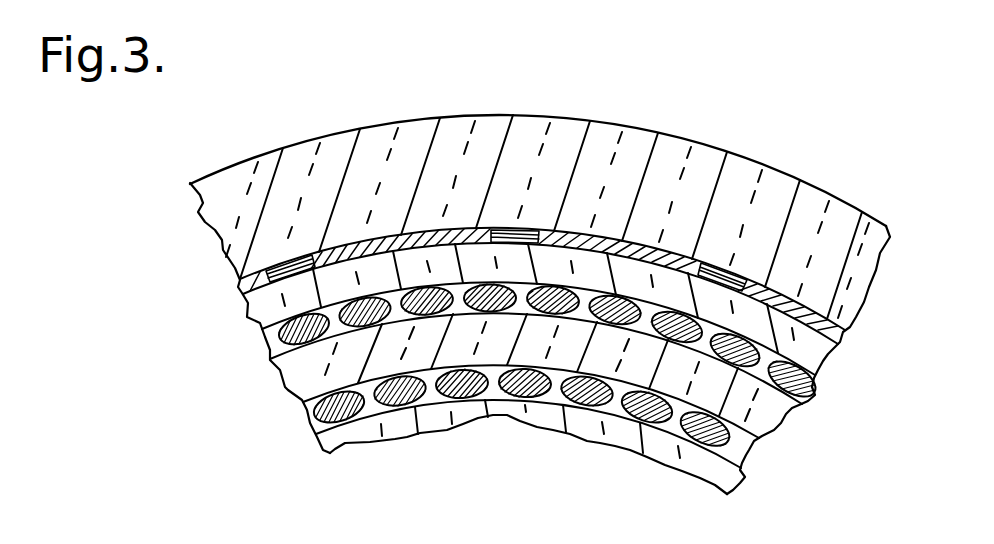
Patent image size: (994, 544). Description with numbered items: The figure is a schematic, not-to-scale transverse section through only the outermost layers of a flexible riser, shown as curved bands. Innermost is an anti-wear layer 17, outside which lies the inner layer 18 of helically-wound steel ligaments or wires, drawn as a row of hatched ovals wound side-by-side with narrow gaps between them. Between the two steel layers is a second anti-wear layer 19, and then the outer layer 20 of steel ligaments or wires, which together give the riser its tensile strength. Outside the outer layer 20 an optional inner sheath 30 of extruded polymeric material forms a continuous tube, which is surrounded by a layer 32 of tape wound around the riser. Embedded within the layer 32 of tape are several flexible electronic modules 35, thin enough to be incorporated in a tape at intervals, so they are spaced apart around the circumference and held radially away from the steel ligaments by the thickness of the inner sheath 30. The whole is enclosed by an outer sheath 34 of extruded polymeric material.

The outer sheath 34 is at (215, 207).
The layer of tape 32 is at (250, 300).
The flexible electronic modules 35 is at (510, 232).
The inner sheath 30 is at (280, 302).
The outer layer of steel ligaments or wires 20 is at (817, 393).
The anti-wear layer 19 is at (308, 383).
The inner layer of steel ligaments or wires 18 is at (747, 453).
The anti-wear layer 17 is at (507, 416).